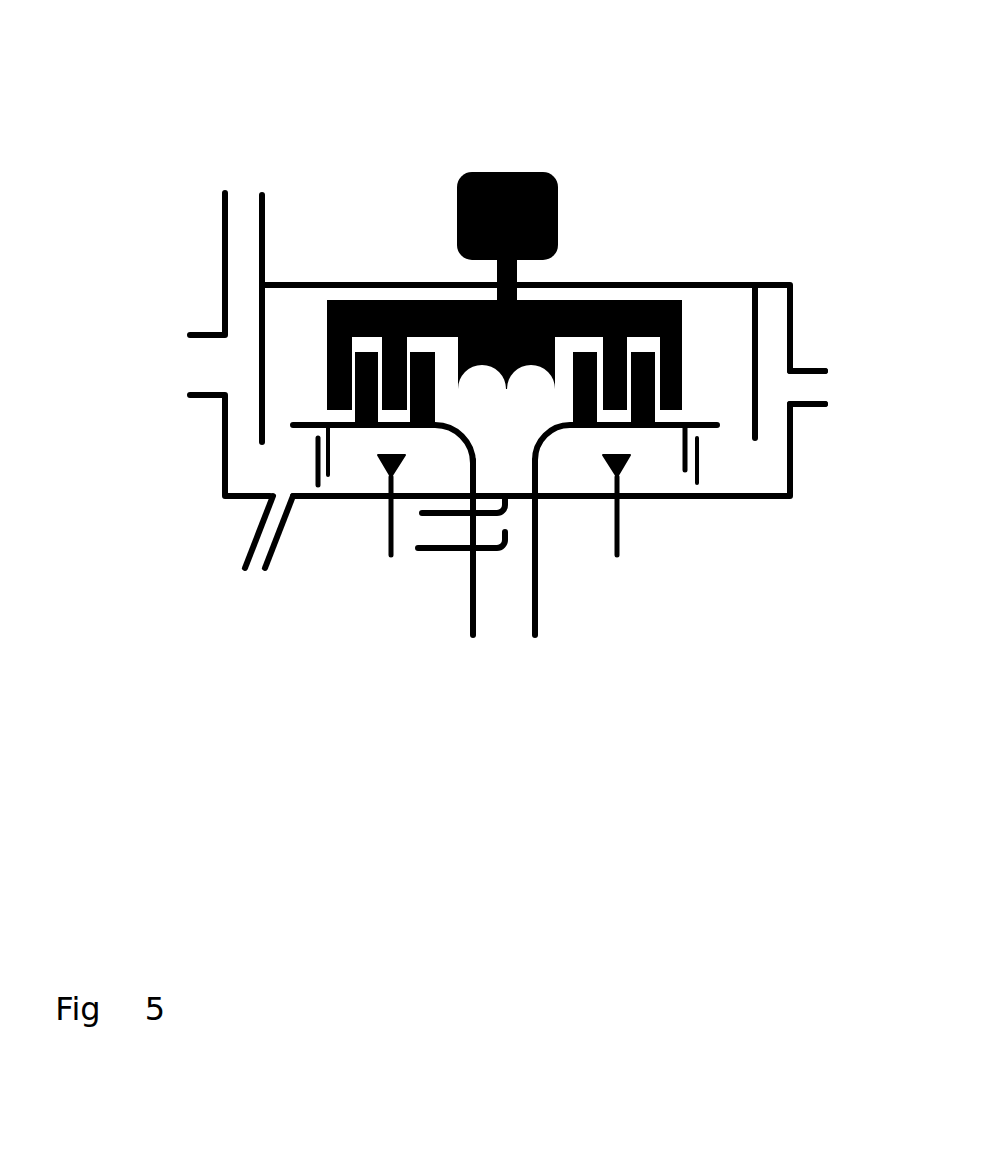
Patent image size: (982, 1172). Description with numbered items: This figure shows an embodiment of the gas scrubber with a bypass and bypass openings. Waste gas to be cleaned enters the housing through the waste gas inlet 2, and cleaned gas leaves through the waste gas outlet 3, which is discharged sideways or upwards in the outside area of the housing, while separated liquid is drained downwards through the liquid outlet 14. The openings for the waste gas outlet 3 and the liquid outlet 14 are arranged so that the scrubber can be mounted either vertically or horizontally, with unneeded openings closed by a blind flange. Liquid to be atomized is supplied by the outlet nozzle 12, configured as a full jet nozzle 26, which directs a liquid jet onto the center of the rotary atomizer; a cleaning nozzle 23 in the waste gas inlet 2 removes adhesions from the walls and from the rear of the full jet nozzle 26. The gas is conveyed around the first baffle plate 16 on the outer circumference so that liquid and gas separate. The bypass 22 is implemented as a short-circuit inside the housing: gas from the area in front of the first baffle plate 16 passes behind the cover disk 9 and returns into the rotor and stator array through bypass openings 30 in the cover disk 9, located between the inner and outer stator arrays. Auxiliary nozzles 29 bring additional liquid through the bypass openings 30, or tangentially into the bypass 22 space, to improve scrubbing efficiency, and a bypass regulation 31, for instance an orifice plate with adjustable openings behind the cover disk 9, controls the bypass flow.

The waste gas inlet 2 is at (497, 600).
The waste gas outlet 3 is at (242, 192).
The cover disk 9 is at (310, 427).
The outlet nozzle 12 is at (359, 708).
The liquid outlet 14 is at (253, 580).
The first baffle plate 16 is at (753, 315).
The bypass 22 is at (643, 465).
The cleaning nozzle 23 is at (423, 517).
The full jet nozzle 26 is at (432, 555).
The auxiliary nozzles 29 is at (390, 508).
The bypass openings 30 is at (393, 427).
The bypass regulation 31 is at (313, 467).